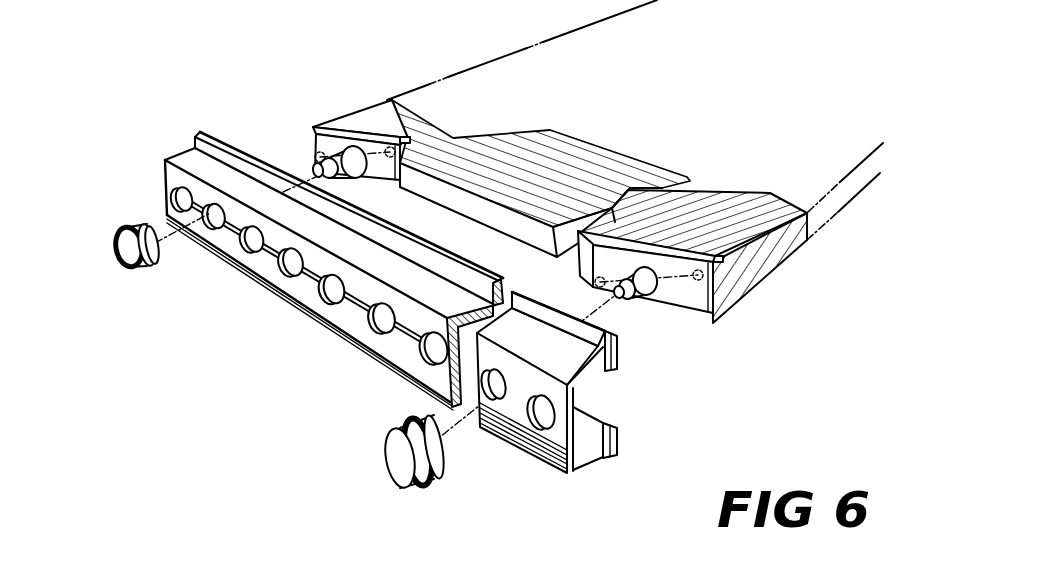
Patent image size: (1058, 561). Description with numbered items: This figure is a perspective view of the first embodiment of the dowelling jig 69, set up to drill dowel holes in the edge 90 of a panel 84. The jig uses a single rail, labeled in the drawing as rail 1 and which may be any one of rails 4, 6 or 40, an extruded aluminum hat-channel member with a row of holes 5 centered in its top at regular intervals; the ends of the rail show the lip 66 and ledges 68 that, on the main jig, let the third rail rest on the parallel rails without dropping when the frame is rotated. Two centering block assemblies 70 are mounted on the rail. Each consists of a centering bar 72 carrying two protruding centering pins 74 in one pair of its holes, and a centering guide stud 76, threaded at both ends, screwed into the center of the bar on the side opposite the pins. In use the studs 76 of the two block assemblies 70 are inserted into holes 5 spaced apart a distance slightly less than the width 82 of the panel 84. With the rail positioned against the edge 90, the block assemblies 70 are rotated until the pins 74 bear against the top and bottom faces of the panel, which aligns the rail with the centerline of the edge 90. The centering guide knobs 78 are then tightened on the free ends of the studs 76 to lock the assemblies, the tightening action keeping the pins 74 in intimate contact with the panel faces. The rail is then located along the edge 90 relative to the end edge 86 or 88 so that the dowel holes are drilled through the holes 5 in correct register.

The rail 1 is at (326, 251).
The first rail 4 is at (310, 312).
The second rail 6 is at (310, 312).
The third rail 40 is at (307, 311).
The holes 5 is at (368, 329).
The lip 66 is at (603, 463).
The ledges 68 is at (617, 438).
The dowelling jig 69 is at (287, 251).
The centering block assembly 70 is at (381, 184).
The centering bar 72 is at (372, 178).
The centering pins 74 is at (410, 137).
The centering guide stud 76 is at (330, 166).
The centering guide knob 78 is at (137, 277).
The width 82 is at (842, 172).
The panel 84 is at (556, 150).
The edge 86 is at (767, 257).
The edge 88 is at (344, 112).
The edge 90 is at (517, 232).